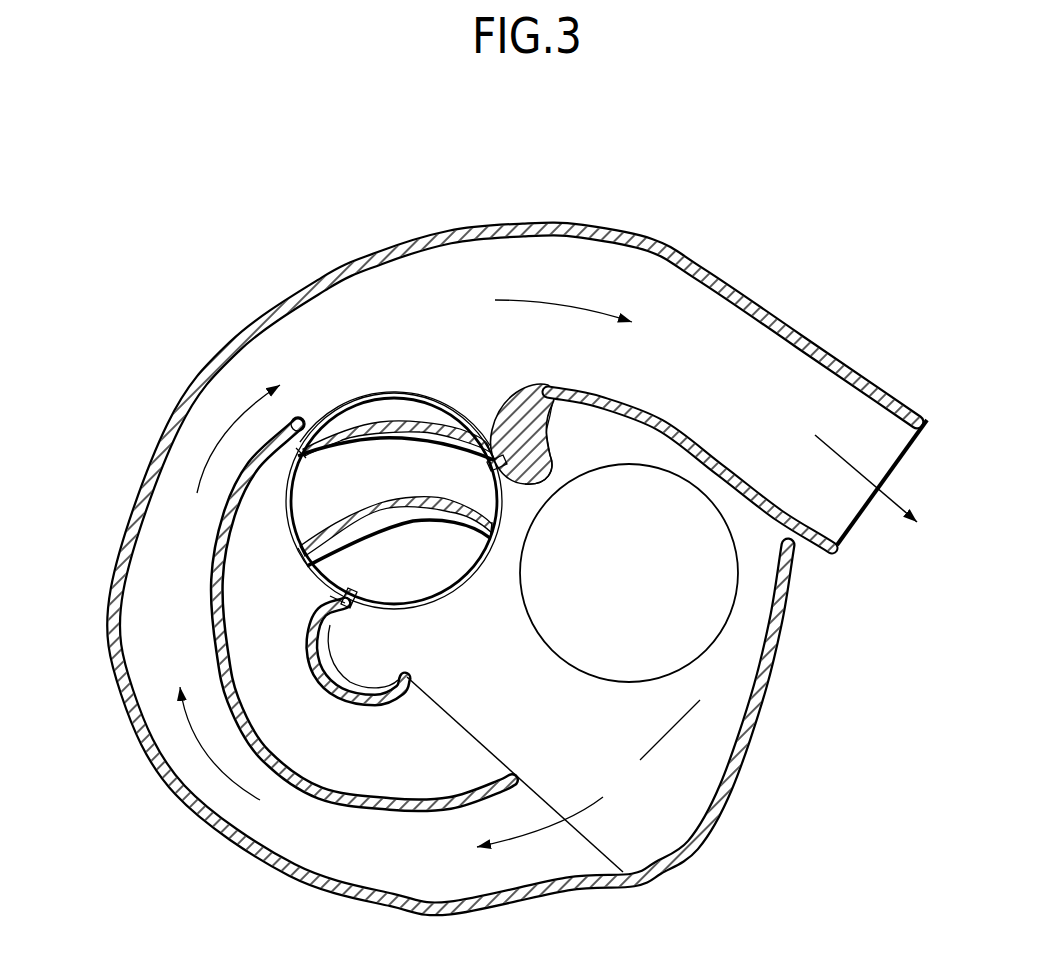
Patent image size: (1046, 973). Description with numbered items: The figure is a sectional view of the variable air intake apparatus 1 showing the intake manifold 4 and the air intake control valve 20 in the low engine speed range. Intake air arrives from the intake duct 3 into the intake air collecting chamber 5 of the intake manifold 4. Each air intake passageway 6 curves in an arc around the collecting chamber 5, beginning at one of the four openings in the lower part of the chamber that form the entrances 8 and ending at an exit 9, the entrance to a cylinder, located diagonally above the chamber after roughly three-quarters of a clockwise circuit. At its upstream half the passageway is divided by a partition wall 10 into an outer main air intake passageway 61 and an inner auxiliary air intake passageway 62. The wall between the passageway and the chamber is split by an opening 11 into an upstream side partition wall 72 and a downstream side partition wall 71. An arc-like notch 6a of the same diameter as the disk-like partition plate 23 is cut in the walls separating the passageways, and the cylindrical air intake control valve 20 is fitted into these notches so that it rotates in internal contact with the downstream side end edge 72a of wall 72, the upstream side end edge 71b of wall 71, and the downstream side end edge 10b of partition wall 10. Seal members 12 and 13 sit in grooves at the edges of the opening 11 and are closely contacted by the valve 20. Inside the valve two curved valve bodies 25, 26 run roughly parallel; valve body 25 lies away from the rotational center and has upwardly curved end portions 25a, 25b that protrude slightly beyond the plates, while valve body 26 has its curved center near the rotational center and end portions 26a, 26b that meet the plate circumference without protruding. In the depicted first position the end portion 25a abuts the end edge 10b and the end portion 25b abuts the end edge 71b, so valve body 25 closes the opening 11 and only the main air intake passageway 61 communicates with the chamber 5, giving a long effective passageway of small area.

The variable air intake apparatus 1 is at (505, 170).
The intake duct 3 is at (740, 587).
The intake manifold 4 is at (102, 706).
The intake air collecting chamber 5 is at (599, 761).
The air intake passageway 6 is at (380, 316).
The arc-like notch 6a is at (340, 400).
The main air intake passageway 61 is at (302, 838).
The auxiliary air intake passageway 62 is at (342, 758).
The entrance 8 is at (545, 787).
The exit 9 is at (857, 537).
The partition wall 10 is at (215, 660).
The downstream side end edge 10b is at (298, 418).
The opening 11 is at (312, 598).
The seal member 12 is at (351, 594).
The seal member 13 is at (490, 465).
The air intake control valve 20 is at (455, 617).
The disk-like partition plate 23 is at (433, 412).
The valve body 25 is at (378, 418).
The end portion 25a is at (305, 455).
The end portion 25b is at (475, 430).
The valve body 26 is at (378, 496).
The end portion 26a is at (306, 557).
The end portion 26b is at (490, 556).
The downstream side partition wall 71 is at (662, 418).
The upstream side end edge 71b is at (549, 482).
The upstream side partition wall 72 is at (307, 655).
The downstream side end edge 72a is at (358, 618).